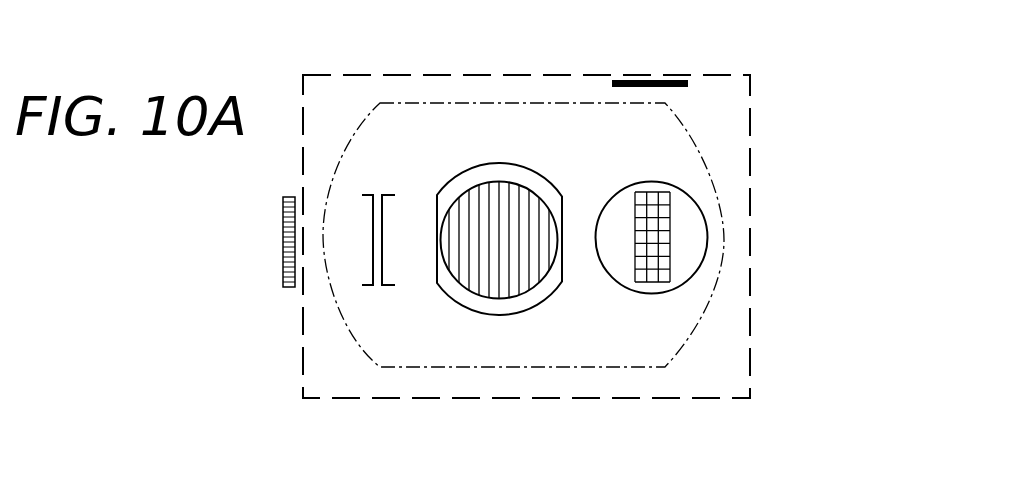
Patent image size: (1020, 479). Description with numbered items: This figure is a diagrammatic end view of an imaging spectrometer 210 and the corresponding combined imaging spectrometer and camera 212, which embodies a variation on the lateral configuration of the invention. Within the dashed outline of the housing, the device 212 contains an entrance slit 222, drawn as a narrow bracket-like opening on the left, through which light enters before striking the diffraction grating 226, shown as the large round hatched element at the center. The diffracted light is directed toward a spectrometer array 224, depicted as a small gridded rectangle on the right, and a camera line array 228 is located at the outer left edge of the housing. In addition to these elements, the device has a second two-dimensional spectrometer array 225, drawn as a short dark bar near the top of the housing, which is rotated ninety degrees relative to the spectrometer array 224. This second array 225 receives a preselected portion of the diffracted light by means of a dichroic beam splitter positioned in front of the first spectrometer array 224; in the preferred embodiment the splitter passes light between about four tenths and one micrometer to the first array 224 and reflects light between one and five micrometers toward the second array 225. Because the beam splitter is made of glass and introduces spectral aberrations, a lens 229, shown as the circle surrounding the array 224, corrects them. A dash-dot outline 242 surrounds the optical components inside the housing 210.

The imaging spectrometer 210 is at (752, 137).
The combined imaging spectrometer and camera 212 is at (302, 50).
The entrance slit 222 is at (382, 260).
The spectrometer array 224 is at (670, 263).
The second two-dimensional spectrometer array 225 is at (653, 80).
The diffraction grating 226 is at (538, 170).
The camera line array 228 is at (283, 247).
The lens 229 is at (708, 230).
The inner outline 242 is at (722, 257).